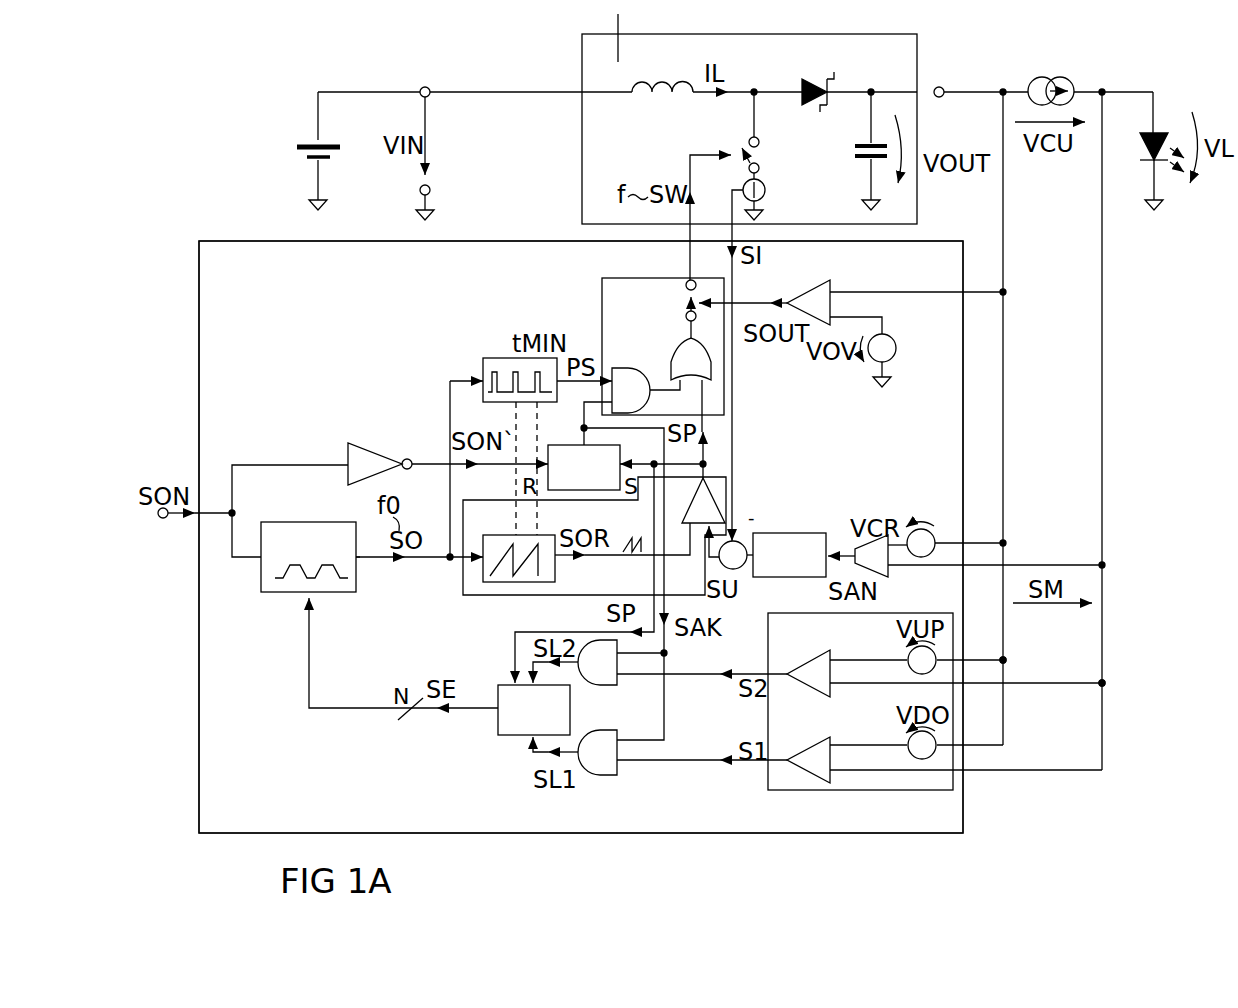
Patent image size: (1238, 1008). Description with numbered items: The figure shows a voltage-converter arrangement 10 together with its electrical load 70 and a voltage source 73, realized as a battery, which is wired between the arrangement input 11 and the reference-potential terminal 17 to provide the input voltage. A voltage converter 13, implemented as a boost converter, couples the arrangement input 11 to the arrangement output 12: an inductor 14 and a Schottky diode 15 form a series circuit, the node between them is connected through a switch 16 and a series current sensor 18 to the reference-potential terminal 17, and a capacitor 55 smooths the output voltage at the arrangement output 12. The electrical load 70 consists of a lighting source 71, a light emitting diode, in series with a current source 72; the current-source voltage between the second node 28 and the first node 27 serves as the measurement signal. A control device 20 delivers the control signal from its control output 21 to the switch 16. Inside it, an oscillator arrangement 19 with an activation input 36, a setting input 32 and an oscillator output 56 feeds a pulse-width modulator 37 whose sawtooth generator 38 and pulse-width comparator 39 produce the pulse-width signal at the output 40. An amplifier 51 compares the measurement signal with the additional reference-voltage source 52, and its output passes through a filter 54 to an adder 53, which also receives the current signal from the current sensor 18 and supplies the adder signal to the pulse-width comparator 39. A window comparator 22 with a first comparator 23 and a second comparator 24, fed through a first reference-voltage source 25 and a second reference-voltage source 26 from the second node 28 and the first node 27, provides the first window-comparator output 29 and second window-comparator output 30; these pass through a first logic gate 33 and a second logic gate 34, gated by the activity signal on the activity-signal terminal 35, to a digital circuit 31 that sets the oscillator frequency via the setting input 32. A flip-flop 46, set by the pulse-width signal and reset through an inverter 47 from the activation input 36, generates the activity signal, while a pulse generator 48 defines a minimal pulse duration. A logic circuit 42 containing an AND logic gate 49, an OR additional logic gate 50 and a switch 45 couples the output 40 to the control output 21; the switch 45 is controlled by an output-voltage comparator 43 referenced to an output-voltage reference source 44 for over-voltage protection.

The voltage-converter arrangement 10 is at (942, 213).
The arrangement input 11 is at (429, 96).
The arrangement output 12 is at (942, 97).
The voltage converter 13 is at (582, 156).
The inductor 14 is at (652, 105).
The diode 15 is at (818, 108).
The switch 16 is at (734, 146).
The reference-potential terminal 17 is at (322, 206).
The current sensor 18 is at (742, 185).
The oscillator arrangement 19 is at (262, 590).
The control device 20 is at (199, 298).
The control output 21 is at (688, 266).
The window comparator 22 is at (955, 782).
The first comparator 23 is at (816, 745).
The second comparator 24 is at (817, 654).
The first reference-voltage source 25 is at (896, 745).
The second reference-voltage source 26 is at (894, 660).
The first node 27 is at (1106, 684).
The second node 28 is at (1007, 662).
The first window-comparator output 29 is at (776, 772).
The second window-comparator output 30 is at (770, 672).
The digital circuit 31 is at (504, 736).
The setting input 32 is at (308, 602).
The first logic gate 33 is at (625, 724).
The second logic gate 34 is at (592, 688).
The activity-signal terminal 35 is at (668, 655).
The activation input 36 is at (199, 518).
The pulse-width modulator 37 is at (472, 598).
The sawtooth generator 38 is at (557, 580).
The pulse-width comparator 39 is at (690, 512).
The output of the pulse-width modulator 40 is at (720, 485).
The logic circuit 42 is at (603, 298).
The output-voltage comparator 43 is at (816, 292).
The output-voltage reference source 44 is at (897, 346).
The switch 45 is at (685, 317).
The flip-flop 46 is at (575, 445).
The inverter 47 is at (377, 434).
The pulse generator 48 is at (487, 357).
The logic gate 49 is at (614, 366).
The additional logic gate 50 is at (680, 362).
The amplifier 51 is at (855, 544).
The additional reference-voltage source 52 is at (932, 528).
The adder 53 is at (746, 565).
The filter 54 is at (780, 532).
The capacitor 55 is at (862, 140).
The oscillator output 56 is at (358, 592).
The electrical load 70 is at (1145, 124).
The lighting source 71 is at (1144, 135).
The current source 72 is at (1067, 76).
The voltage source 73 is at (304, 142).